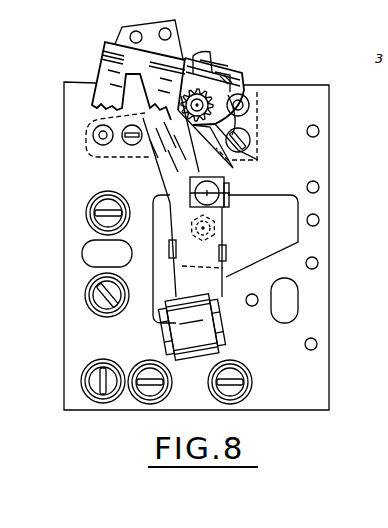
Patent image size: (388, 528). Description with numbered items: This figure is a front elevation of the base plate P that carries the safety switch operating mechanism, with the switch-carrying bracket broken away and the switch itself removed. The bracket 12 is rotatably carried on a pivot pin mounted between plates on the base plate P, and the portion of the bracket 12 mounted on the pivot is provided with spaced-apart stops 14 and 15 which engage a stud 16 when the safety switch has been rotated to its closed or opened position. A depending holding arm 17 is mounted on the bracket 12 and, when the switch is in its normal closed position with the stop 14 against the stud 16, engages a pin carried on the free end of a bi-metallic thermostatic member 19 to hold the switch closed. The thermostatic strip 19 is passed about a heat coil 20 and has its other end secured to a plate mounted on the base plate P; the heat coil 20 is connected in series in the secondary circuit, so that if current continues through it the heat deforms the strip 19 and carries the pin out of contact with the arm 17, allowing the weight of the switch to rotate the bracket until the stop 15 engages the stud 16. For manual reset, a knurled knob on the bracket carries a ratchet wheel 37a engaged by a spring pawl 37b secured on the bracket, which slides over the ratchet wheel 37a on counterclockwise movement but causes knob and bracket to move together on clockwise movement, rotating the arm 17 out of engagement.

The base plate P is at (318, 153).
The ratchet wheel 37a is at (102, 57).
The spring pawl 37b is at (204, 78).
The bracket 12 is at (215, 72).
The stop 14 is at (242, 92).
The stud 16 is at (249, 111).
The stop 15 is at (231, 158).
The holding arm 17 is at (161, 175).
The bi-metallic thermostatic member 19 is at (206, 288).
The heat coil 20 is at (222, 335).